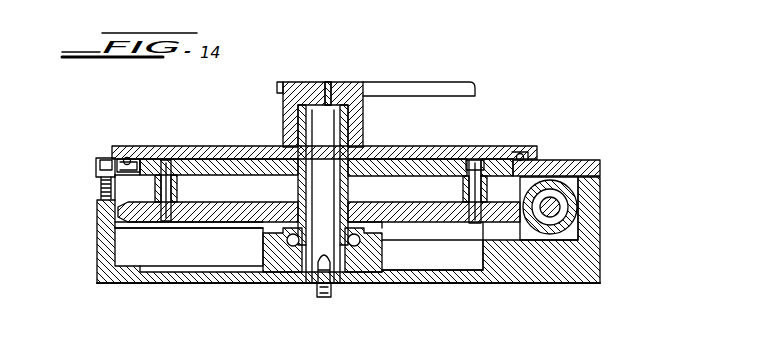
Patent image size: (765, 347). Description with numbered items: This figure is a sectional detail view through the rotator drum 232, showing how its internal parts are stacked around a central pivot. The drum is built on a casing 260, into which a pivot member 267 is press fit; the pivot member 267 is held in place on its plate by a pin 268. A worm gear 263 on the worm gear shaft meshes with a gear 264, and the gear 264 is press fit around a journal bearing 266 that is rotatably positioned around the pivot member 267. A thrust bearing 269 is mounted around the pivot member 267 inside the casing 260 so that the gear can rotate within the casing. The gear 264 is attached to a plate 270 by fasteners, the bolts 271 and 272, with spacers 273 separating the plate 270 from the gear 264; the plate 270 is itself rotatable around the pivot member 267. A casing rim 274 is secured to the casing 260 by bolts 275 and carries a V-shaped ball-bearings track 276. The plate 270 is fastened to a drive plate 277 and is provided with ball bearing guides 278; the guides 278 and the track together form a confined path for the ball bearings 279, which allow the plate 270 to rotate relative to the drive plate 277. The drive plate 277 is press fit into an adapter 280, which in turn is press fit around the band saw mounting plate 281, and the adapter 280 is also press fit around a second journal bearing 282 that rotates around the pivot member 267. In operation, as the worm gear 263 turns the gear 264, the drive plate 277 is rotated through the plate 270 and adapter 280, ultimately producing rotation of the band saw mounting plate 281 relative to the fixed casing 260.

The rotator drum 232 is at (441, 297).
The casing 260 is at (98, 247).
The worm gear 263 is at (560, 205).
The gear 264 is at (202, 213).
The journal bearing 266 is at (352, 187).
The pivot member 267 is at (310, 262).
The pin 268 is at (318, 295).
The thrust bearing 269 is at (285, 243).
The plate 270 is at (411, 160).
The bolt 271 is at (475, 223).
The bolt 272 is at (168, 223).
The spacers 273 is at (158, 197).
The casing rim 274 is at (100, 163).
The bolts 275 is at (100, 190).
The V-shaped ball-bearings track 276 is at (146, 159).
The drive plate 277 is at (287, 147).
The ball bearing guides 278 is at (140, 152).
The ball bearings 279 is at (125, 150).
The adapter 280 is at (350, 84).
The band saw mounting plate 281 is at (446, 90).
The journal bearing 282 is at (298, 118).